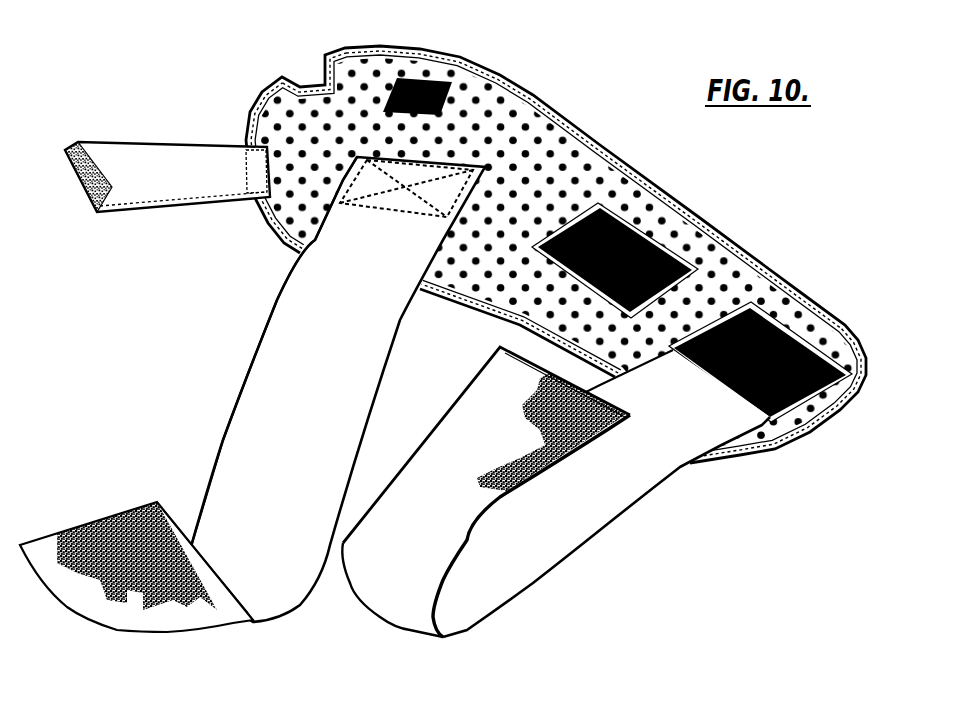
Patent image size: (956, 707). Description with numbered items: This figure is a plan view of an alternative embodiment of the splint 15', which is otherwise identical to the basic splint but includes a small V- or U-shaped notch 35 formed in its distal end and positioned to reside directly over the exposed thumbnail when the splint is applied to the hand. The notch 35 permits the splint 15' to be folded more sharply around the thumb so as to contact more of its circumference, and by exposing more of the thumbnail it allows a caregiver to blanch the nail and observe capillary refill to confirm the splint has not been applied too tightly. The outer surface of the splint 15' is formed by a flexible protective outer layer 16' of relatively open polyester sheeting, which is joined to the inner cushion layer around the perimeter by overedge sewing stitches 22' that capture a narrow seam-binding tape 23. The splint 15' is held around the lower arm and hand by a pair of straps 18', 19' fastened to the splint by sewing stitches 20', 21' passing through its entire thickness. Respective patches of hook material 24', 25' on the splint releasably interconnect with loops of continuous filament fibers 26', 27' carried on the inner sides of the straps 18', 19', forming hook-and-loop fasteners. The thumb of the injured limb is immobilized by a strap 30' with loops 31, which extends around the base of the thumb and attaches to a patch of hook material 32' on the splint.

The splint 15' is at (556, 245).
The flexible protective outer layer 16' is at (556, 239).
The strap 18' is at (295, 376).
The strap 19' is at (556, 508).
The sewing stitches 20' is at (455, 145).
The sewing stitches 21' is at (782, 362).
The overedge sewing stitches 22' is at (248, 131).
The seam-binding tape 23 is at (268, 223).
The patch of hook material 24' is at (639, 251).
The patch of hook material 25' is at (776, 397).
The loops of continuous filament fibers 26' is at (136, 590).
The loops of continuous filament fibers 27' is at (492, 521).
The strap 30' is at (147, 140).
The loops 31 is at (78, 165).
The patch of hook material 32' is at (417, 58).
The notch 35 is at (312, 83).